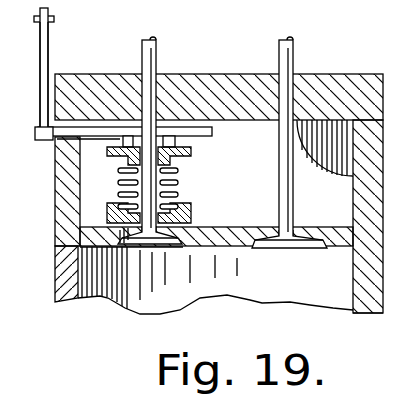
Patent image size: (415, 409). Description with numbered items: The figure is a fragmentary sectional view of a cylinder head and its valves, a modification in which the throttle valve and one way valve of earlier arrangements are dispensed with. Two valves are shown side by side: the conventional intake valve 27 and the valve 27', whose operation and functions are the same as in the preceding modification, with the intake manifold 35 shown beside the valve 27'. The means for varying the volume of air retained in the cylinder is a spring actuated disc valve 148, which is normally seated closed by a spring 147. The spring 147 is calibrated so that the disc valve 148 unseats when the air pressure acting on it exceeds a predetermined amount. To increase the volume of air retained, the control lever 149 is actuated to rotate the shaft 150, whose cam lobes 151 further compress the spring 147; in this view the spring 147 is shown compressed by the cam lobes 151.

The control lever 149 is at (48, 35).
The intake valve 27 is at (159, 140).
The valve 27' is at (296, 142).
The intake manifold 35 is at (338, 122).
The shaft 150 is at (112, 137).
The cam lobes 151 is at (112, 150).
The spring 147 is at (115, 185).
The disc valve 148 is at (108, 211).